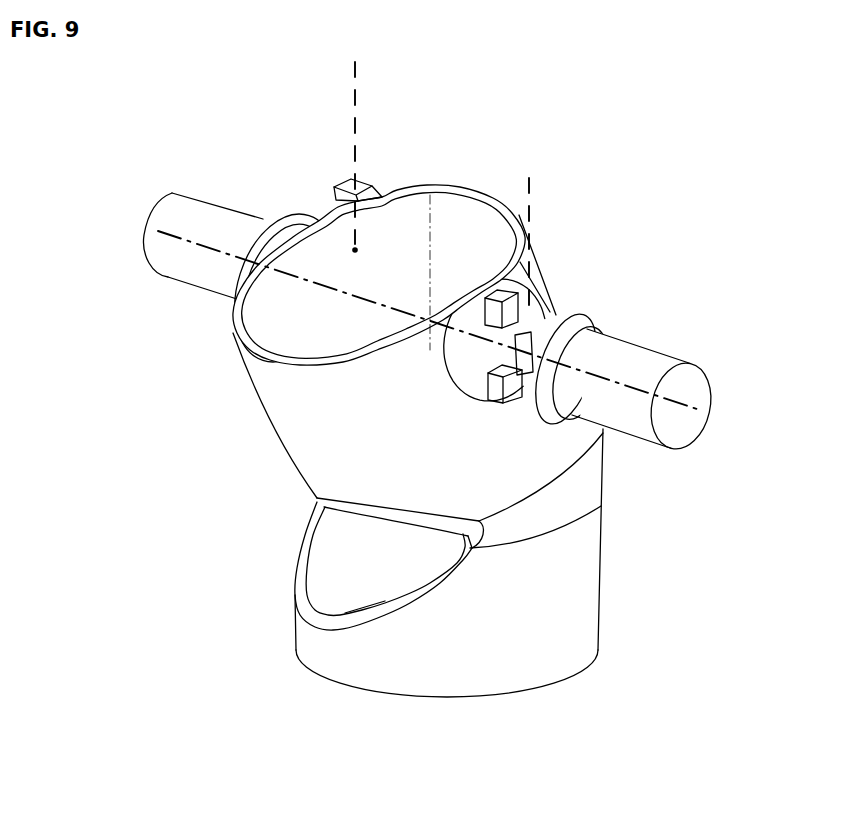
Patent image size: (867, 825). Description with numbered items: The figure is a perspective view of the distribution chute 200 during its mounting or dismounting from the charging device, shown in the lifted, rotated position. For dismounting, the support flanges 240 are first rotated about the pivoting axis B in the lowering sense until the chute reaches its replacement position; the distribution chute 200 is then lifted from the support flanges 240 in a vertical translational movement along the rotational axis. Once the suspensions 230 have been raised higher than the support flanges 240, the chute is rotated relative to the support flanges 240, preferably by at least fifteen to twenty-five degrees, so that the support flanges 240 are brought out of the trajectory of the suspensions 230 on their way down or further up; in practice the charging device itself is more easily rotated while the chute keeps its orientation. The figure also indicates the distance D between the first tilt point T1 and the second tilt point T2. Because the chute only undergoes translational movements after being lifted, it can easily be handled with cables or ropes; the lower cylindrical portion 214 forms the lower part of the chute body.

The distribution chute 200 is at (252, 486).
The cylindrical base portion 214 is at (583, 597).
The suspensions 230 is at (385, 166).
The support flanges 240 is at (287, 214).
The pivoting axis B is at (640, 397).
The distance between the first and second tilt points D is at (527, 190).
The first tilt point T1 is at (348, 258).
The second tilt point T2 is at (504, 358).